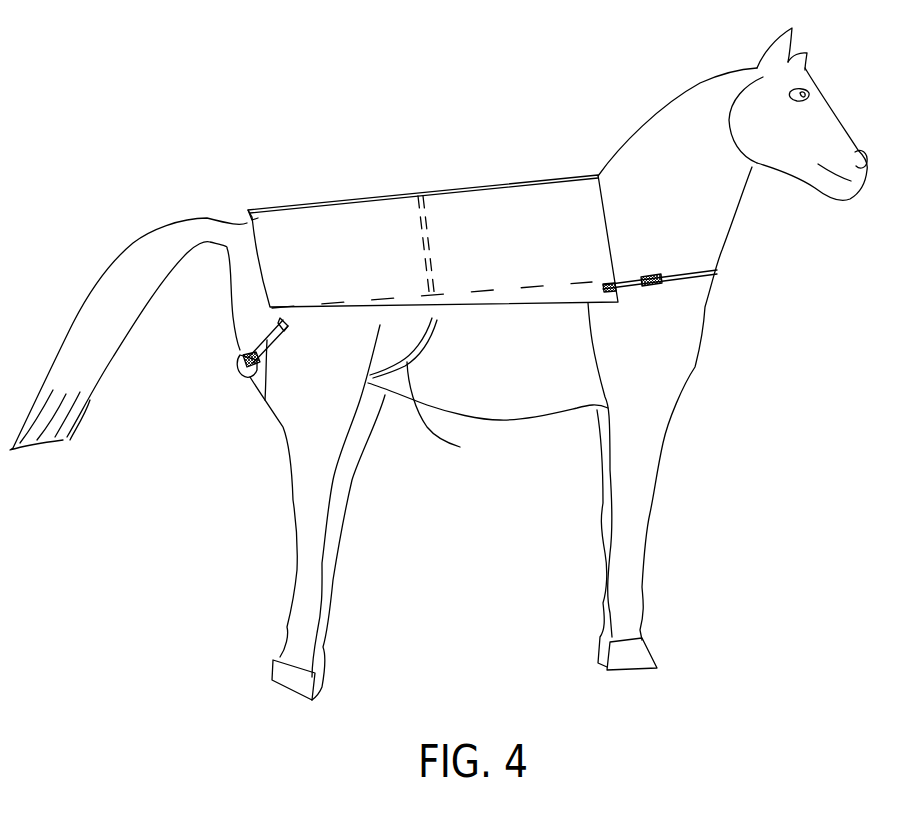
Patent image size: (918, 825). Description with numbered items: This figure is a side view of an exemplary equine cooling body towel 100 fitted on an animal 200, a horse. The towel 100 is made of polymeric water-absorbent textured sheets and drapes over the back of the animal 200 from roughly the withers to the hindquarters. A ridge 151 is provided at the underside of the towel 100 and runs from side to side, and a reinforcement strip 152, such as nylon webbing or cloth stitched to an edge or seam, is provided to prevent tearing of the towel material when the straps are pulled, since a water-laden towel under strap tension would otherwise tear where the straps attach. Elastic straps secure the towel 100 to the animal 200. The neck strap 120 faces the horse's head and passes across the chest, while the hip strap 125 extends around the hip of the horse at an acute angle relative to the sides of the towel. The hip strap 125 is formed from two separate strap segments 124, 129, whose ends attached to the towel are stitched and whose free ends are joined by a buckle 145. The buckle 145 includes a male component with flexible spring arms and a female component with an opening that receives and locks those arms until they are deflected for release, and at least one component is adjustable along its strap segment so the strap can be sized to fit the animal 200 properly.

The equine cooling body towel 100 is at (397, 187).
The neck strap 120 is at (717, 285).
The strap segment 124 is at (435, 337).
The hip strap 125 is at (451, 412).
The strap segment 129 is at (265, 400).
The buckle 145 is at (240, 360).
The ridge 151 is at (430, 238).
The reinforcement strip 152 is at (534, 288).
The animal 200 is at (681, 377).